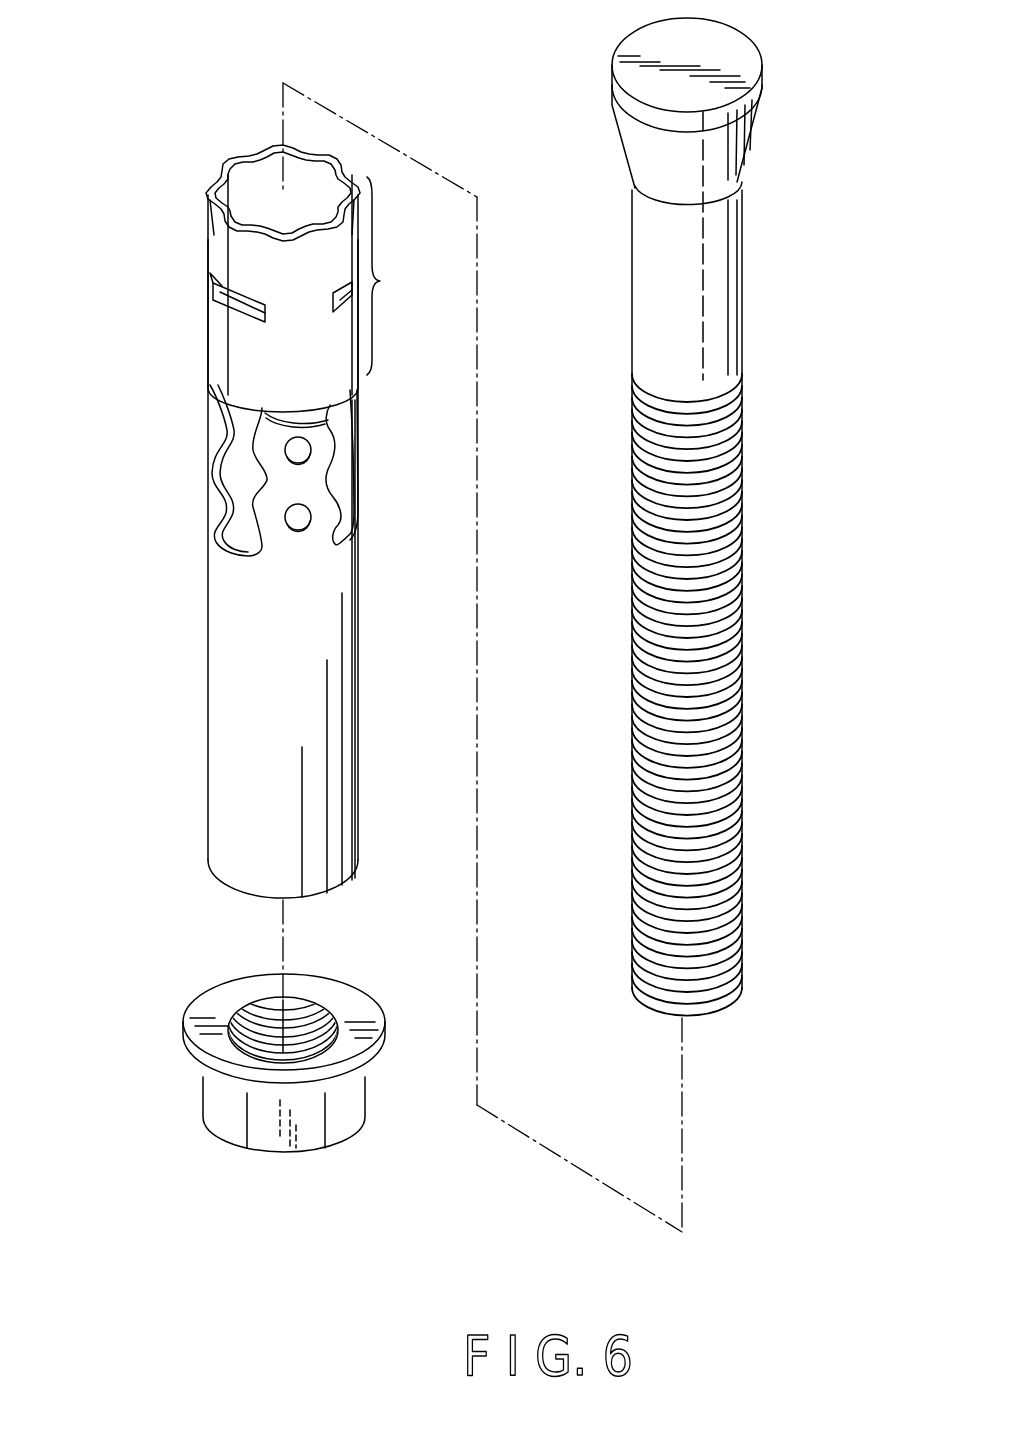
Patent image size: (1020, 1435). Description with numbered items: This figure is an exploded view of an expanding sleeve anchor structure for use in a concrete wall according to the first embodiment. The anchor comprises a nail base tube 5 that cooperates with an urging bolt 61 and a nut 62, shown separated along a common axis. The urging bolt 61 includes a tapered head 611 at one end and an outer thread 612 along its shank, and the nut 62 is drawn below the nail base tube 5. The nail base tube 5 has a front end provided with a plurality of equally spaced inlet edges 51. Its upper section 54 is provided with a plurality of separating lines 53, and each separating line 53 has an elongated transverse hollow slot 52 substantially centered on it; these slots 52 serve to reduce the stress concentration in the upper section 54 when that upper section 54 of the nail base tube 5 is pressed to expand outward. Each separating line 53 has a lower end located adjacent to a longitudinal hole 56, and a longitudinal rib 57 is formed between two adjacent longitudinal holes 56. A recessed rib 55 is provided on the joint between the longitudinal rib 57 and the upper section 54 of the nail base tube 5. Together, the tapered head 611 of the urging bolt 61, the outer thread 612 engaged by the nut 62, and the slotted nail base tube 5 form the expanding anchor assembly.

The nail base tube 5 is at (195, 642).
The inlet edges 51 is at (213, 172).
The elongated transverse hollow slot 52 is at (210, 323).
The separating lines 53 is at (228, 255).
The upper section 54 is at (396, 276).
The recessed rib 55 is at (310, 420).
The longitudinal hole 56 is at (245, 500).
The longitudinal rib 57 is at (302, 487).
The urging bolt 61 is at (742, 327).
The tapered head 611 is at (633, 143).
The outer thread 612 is at (740, 806).
The nut 62 is at (200, 1088).